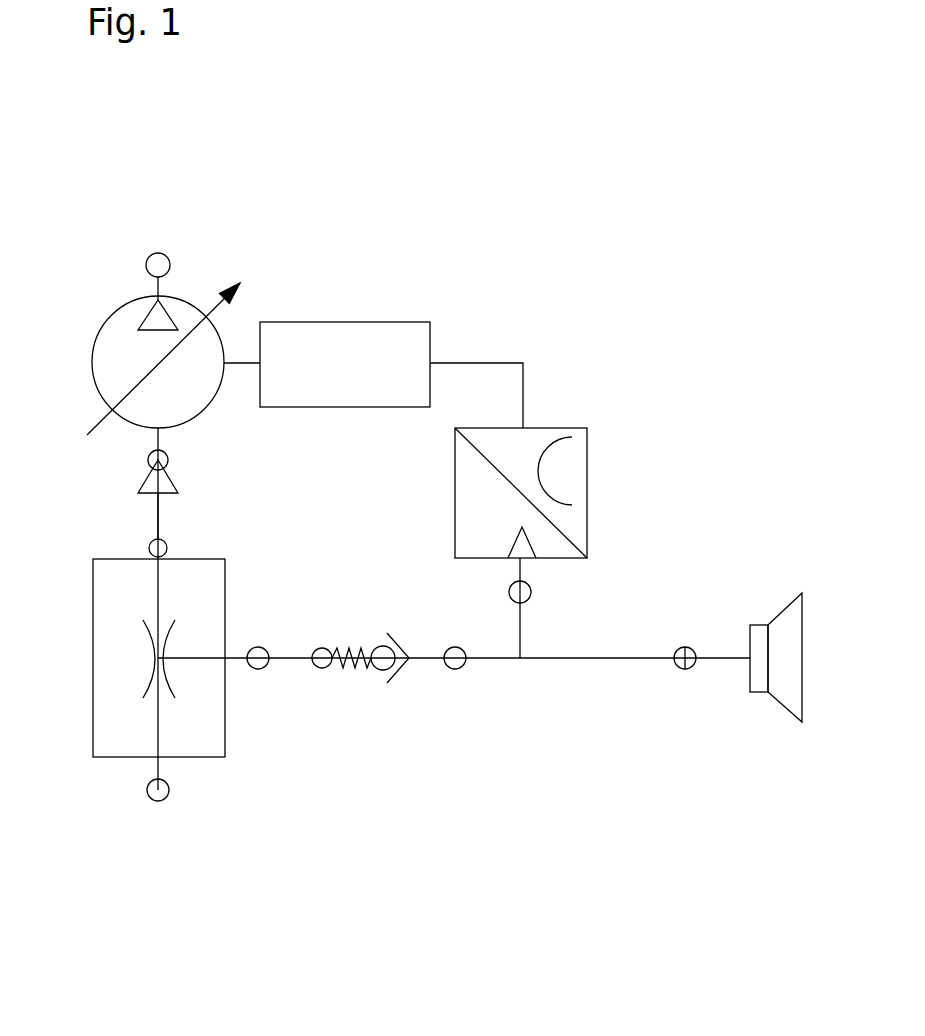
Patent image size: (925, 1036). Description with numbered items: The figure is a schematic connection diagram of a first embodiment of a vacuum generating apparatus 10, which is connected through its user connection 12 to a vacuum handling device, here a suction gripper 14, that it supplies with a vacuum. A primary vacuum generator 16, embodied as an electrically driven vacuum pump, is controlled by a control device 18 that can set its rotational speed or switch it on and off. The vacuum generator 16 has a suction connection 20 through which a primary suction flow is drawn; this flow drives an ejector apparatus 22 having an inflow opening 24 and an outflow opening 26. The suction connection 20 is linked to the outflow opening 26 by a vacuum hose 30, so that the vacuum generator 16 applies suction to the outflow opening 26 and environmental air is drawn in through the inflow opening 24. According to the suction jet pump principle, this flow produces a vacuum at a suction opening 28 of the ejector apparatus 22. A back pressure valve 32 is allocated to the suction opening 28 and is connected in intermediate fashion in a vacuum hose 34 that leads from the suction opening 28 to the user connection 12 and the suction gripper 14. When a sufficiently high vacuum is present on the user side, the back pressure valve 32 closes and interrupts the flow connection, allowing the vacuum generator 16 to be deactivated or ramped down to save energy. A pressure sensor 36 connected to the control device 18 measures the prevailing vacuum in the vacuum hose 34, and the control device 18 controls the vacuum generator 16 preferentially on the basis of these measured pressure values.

The vacuum generating apparatus 10 is at (692, 262).
The user connection 12 is at (677, 675).
The suction gripper 14 is at (802, 738).
The primary vacuum generator 16 is at (108, 347).
The control device 18 is at (345, 332).
The suction connection 20 is at (168, 457).
The ejector apparatus 22 is at (232, 585).
The inflow opening 24 is at (171, 789).
The outflow opening 26 is at (148, 545).
The suction opening 28 is at (262, 667).
The vacuum hose 30 is at (158, 513).
The back pressure valve 32 is at (368, 684).
The vacuum hose 34 is at (492, 658).
The pressure sensor 36 is at (587, 478).